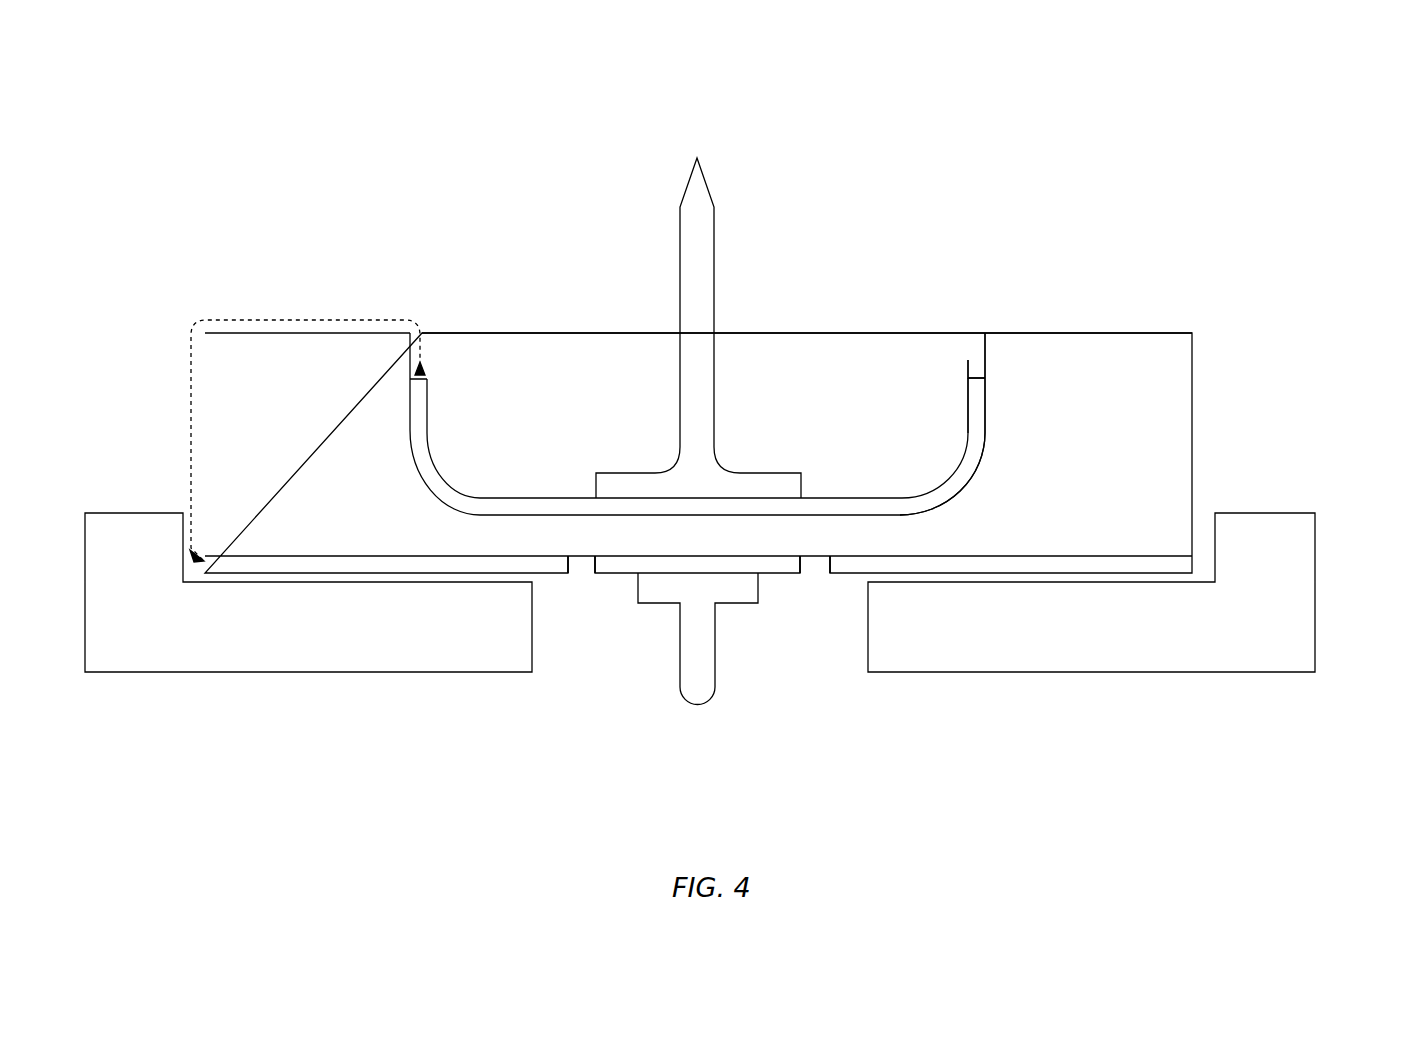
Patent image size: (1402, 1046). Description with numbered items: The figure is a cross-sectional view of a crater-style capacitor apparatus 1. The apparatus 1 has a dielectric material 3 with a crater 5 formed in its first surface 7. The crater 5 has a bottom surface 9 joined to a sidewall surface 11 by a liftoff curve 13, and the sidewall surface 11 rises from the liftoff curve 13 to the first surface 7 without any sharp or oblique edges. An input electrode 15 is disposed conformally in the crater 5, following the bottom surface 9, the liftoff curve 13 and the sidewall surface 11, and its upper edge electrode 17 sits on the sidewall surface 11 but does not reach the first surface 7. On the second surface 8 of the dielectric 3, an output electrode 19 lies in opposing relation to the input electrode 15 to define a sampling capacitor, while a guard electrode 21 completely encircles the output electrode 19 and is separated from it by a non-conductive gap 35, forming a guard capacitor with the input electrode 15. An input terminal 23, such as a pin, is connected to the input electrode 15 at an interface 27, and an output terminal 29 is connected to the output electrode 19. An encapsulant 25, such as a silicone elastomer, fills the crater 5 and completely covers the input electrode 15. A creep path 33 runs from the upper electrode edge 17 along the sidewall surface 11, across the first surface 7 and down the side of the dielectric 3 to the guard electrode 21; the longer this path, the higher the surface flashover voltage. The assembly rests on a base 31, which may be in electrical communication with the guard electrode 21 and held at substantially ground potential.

The apparatus 1 is at (937, 95).
The dielectric material 3 is at (1192, 372).
The crater 5 is at (530, 398).
The first surface 7 is at (1113, 328).
The second surface 8 is at (810, 557).
The bottom surface 9 is at (878, 516).
The sidewall surface 11 is at (987, 360).
The liftoff curve 13 is at (975, 481).
The input electrode 15 is at (872, 492).
The upper edge electrode 17 is at (967, 365).
The output electrode 19 is at (777, 578).
The guard electrode 21 is at (548, 575).
The input terminal 23 is at (708, 185).
The encapsulant 25 is at (805, 330).
The interface 27 is at (593, 495).
The output terminal 29 is at (699, 702).
The base 31 is at (1318, 640).
The creep path 33 is at (192, 432).
The non-conductive gap 35 is at (582, 573).